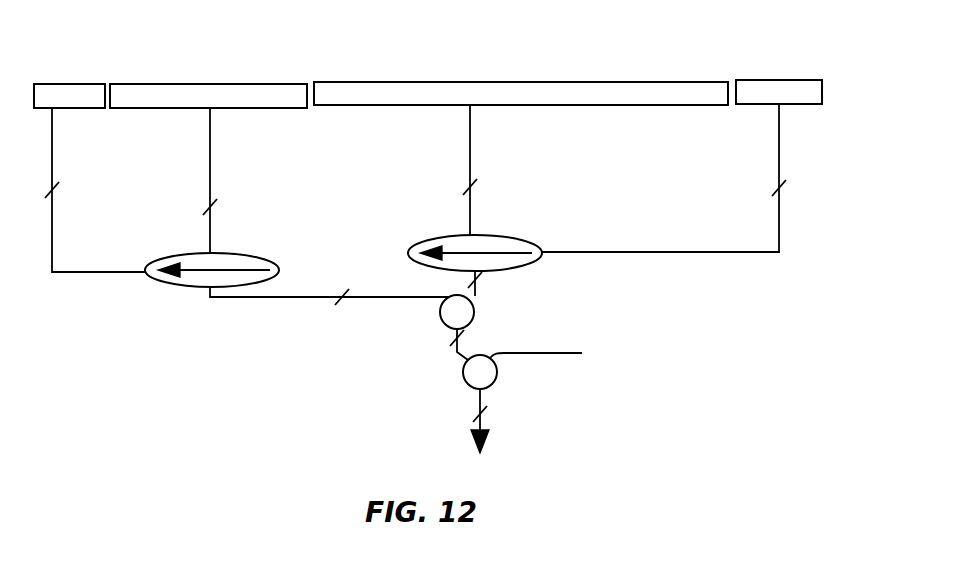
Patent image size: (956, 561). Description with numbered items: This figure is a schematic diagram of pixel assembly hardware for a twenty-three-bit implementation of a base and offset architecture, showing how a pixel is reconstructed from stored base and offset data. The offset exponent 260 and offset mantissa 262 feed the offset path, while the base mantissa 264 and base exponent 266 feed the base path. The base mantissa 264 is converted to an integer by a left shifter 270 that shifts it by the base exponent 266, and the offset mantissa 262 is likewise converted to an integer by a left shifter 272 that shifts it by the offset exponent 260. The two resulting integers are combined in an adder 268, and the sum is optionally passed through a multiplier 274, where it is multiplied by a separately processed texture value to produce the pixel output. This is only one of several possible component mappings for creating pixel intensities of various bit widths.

The offset exponent 260 is at (72, 84).
The offset mantissa 262 is at (194, 84).
The base mantissa 264 is at (504, 82).
The base exponent 266 is at (770, 80).
The adder 268 is at (474, 308).
The base left shifter 270 is at (526, 238).
The offset left shifter 272 is at (279, 268).
The multiplier 274 is at (498, 368).